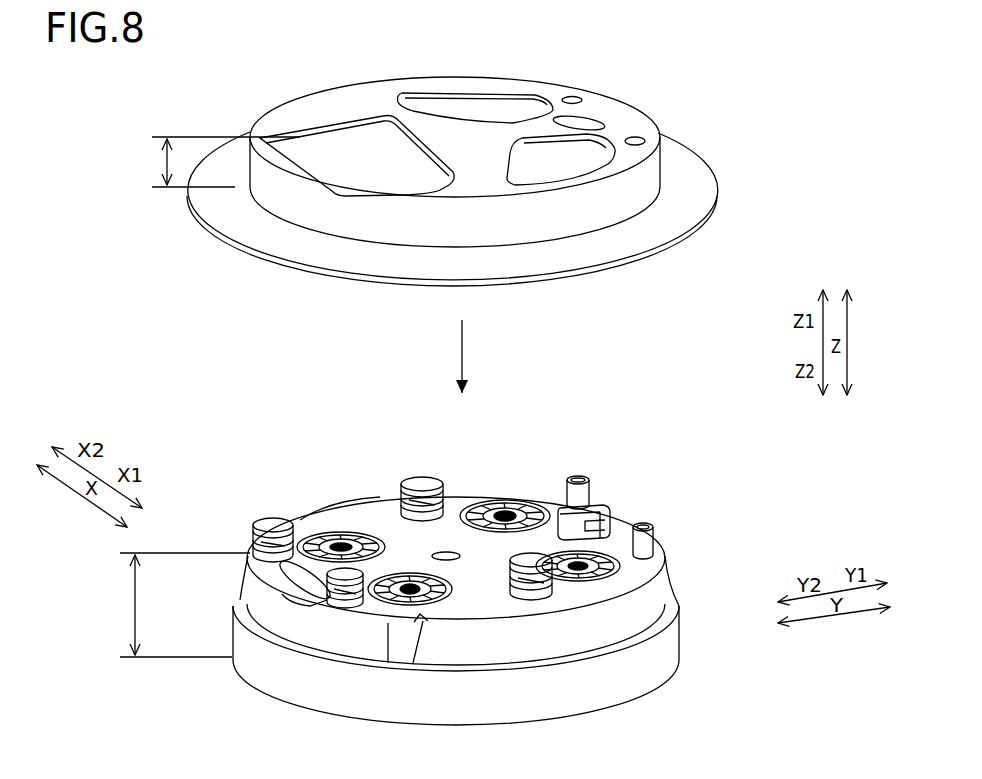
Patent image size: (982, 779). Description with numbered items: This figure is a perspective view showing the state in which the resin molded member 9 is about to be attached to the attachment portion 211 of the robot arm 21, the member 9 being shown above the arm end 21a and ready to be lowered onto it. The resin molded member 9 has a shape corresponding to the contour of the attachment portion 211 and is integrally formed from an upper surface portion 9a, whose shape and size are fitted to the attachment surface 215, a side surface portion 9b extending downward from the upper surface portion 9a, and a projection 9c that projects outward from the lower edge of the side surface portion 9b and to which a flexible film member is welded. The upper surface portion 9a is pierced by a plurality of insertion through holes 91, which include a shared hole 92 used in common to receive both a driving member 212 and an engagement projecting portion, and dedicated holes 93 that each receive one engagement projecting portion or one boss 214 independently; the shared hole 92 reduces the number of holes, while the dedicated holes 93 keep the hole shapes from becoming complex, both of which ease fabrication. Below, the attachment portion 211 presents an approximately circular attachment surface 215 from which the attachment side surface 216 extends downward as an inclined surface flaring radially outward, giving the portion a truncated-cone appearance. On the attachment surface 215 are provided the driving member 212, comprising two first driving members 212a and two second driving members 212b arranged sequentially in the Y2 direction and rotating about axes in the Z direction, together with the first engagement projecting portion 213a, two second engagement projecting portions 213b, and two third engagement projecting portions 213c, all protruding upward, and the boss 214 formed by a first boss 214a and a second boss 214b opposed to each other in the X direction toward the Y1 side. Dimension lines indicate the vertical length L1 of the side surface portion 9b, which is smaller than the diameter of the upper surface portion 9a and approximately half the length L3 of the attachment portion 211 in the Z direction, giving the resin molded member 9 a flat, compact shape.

The resin molded member 9 is at (504, 168).
The upper surface portion 9a is at (358, 101).
The side surface portion 9b is at (263, 212).
The projection 9c is at (298, 248).
The insertion through holes 91 is at (470, 168).
The shared hole 92 is at (290, 128).
The dedicated holes 93 is at (573, 97).
The robot arm 21 is at (491, 575).
The stator core body 21a is at (491, 575).
The attachment portion 211 is at (347, 511).
The driving member 212 is at (518, 578).
The first driving members 212a is at (507, 500).
The second driving members 212b is at (340, 533).
The first engagement projecting portion 213a is at (593, 500).
The second engagement projecting portions 213b is at (422, 480).
The third engagement projecting portions 213c is at (273, 524).
The boss 214 is at (610, 494).
The first boss 214a is at (653, 501).
The second boss 214b is at (582, 478).
The attachment surface 215 is at (377, 507).
The attachment side surface 216 is at (300, 637).
The length of the side surface portion L1 is at (220, 162).
The length of the attachment portion L3 is at (179, 605).